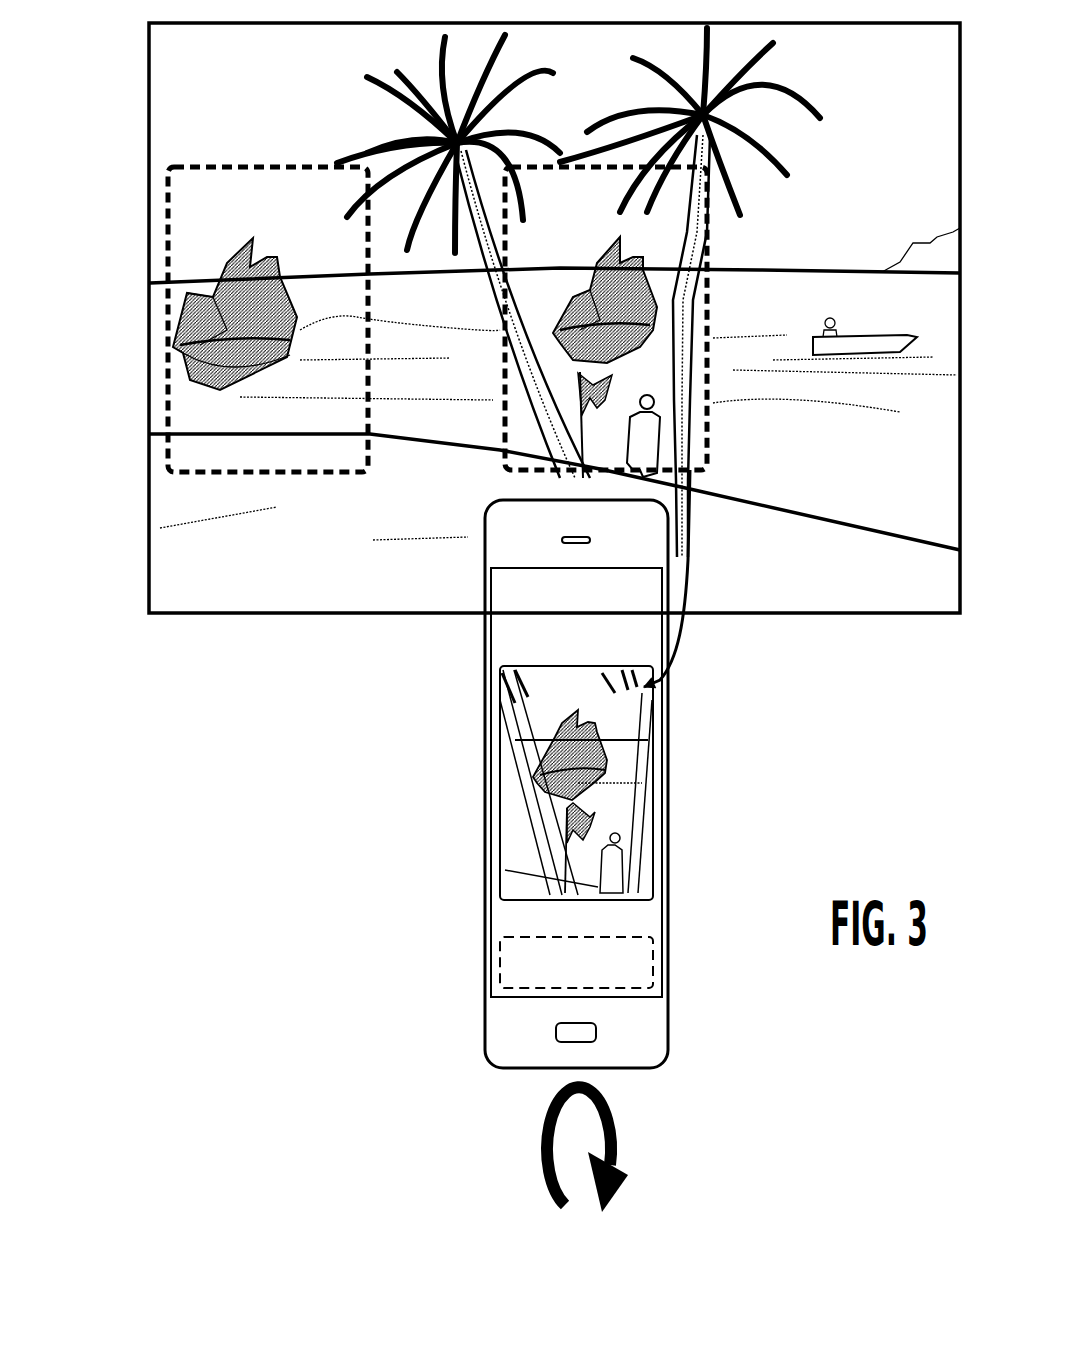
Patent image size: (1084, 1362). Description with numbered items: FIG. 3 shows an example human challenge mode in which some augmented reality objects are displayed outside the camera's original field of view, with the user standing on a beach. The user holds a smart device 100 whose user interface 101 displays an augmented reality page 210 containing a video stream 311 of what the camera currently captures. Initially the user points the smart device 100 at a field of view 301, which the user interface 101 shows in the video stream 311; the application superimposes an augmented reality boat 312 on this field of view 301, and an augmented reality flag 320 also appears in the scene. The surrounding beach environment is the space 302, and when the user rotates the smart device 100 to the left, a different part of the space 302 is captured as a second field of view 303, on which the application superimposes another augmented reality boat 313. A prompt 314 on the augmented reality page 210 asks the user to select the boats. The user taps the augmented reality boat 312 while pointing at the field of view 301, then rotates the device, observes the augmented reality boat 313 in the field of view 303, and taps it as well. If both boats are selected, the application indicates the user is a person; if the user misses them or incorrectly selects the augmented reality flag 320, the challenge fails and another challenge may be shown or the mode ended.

The smart device 100 is at (650, 1032).
The user interface 101 is at (505, 591).
The augmented reality page 210 is at (481, 844).
The field of view 301 is at (710, 428).
The space 302 is at (206, 586).
The field of view 303 is at (168, 388).
The video stream 311 is at (505, 805).
The augmented reality boat 312 is at (649, 265).
The augmented reality boat 313 is at (224, 266).
The prompt 314 is at (502, 974).
The augmented reality flag 320 is at (576, 401).